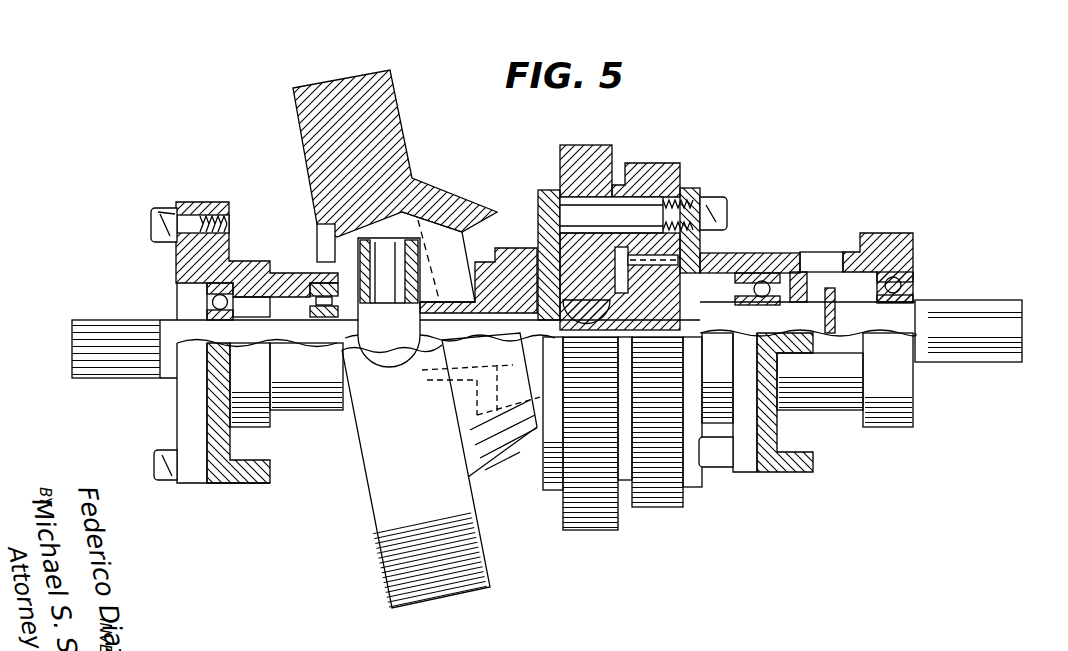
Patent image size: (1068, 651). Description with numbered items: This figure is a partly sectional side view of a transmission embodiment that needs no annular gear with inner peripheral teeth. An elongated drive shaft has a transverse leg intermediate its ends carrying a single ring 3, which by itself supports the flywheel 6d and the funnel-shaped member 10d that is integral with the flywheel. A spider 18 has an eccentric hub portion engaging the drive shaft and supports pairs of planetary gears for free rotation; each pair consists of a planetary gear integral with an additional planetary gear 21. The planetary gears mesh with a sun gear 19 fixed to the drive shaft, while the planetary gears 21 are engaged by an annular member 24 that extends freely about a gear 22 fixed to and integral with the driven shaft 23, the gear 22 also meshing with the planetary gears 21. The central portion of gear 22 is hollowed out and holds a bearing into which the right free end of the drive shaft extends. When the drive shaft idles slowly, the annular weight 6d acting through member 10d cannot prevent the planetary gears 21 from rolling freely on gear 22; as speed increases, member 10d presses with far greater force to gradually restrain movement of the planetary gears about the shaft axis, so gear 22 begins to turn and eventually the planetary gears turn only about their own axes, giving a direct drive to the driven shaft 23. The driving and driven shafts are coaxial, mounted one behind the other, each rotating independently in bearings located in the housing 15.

The ring 3 is at (330, 260).
The flywheel 6d is at (316, 200).
The funnel-shaped member 10d is at (452, 210).
The housing 15 is at (222, 203).
The spider 18 is at (545, 192).
The sun gear 19 is at (568, 337).
The planetary gears 21 is at (658, 172).
The gear 22 is at (652, 345).
The driven shaft 23 is at (972, 308).
The annular member 24 is at (758, 258).